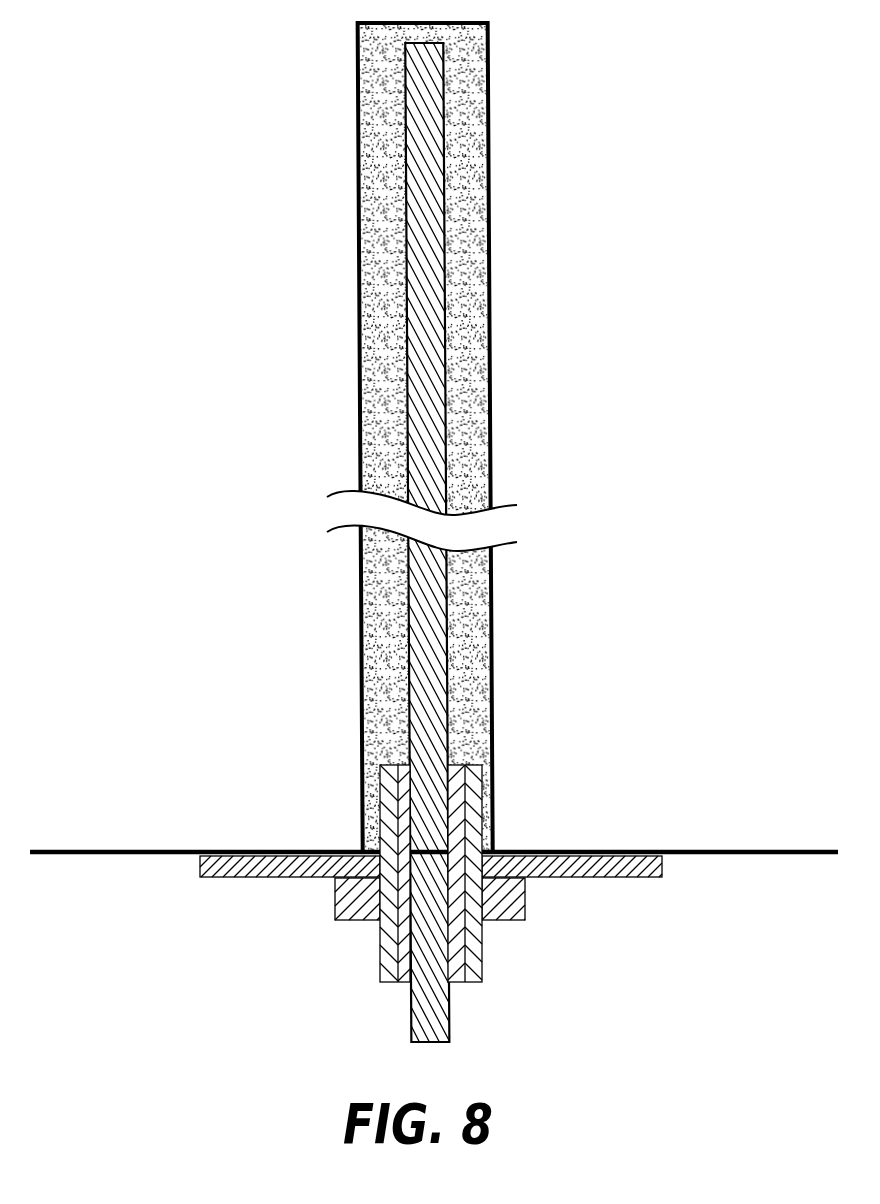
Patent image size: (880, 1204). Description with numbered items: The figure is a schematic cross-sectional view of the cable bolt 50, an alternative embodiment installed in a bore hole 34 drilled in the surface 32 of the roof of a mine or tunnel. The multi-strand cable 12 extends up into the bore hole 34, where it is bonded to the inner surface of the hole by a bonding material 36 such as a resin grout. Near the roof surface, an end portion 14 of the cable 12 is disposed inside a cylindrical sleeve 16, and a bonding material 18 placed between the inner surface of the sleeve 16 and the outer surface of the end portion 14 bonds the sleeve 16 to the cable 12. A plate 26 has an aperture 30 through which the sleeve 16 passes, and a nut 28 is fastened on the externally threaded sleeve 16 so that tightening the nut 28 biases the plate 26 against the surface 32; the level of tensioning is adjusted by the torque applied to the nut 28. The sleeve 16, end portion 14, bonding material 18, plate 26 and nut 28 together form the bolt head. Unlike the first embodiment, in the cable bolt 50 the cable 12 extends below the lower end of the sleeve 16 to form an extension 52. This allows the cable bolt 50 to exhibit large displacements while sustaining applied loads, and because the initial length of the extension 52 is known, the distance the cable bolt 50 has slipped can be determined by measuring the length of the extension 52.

The multi-strand cable 12 is at (430, 274).
The end portion 14 is at (430, 958).
The sleeve 16 is at (382, 963).
The bonding material 18 is at (457, 965).
The plate 26 is at (200, 879).
The nut 28 is at (335, 906).
The aperture 30 is at (482, 880).
The surface 32 is at (728, 853).
The bore hole 34 is at (358, 133).
The bonding material 36 is at (393, 228).
The cable bolt 50 is at (461, 354).
The extension 52 is at (412, 1020).